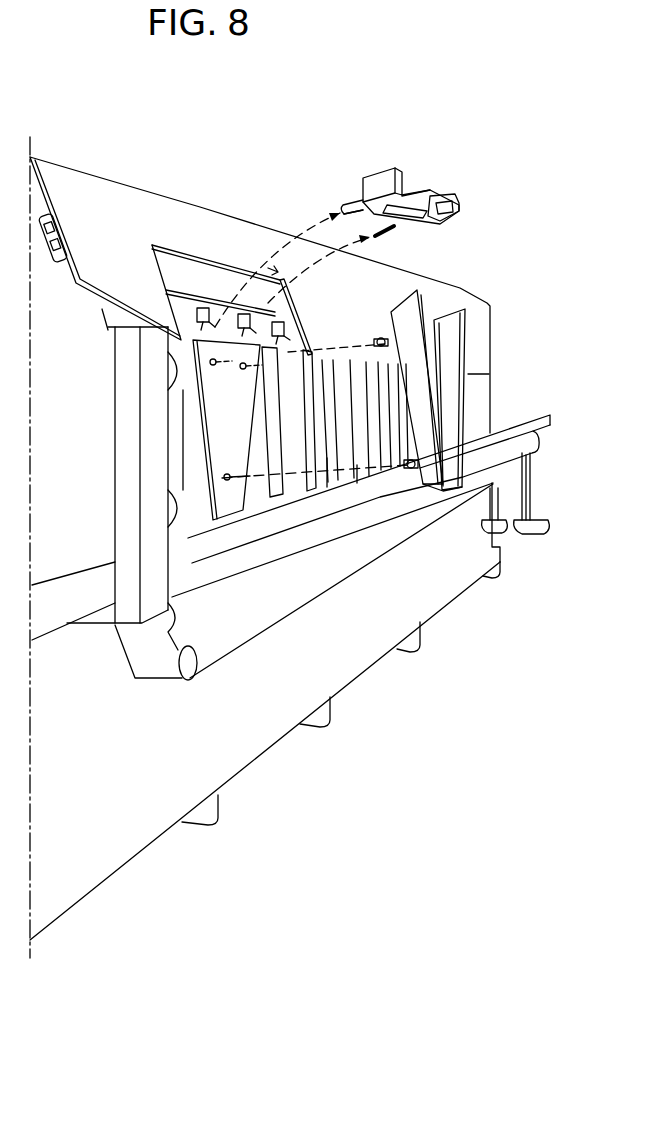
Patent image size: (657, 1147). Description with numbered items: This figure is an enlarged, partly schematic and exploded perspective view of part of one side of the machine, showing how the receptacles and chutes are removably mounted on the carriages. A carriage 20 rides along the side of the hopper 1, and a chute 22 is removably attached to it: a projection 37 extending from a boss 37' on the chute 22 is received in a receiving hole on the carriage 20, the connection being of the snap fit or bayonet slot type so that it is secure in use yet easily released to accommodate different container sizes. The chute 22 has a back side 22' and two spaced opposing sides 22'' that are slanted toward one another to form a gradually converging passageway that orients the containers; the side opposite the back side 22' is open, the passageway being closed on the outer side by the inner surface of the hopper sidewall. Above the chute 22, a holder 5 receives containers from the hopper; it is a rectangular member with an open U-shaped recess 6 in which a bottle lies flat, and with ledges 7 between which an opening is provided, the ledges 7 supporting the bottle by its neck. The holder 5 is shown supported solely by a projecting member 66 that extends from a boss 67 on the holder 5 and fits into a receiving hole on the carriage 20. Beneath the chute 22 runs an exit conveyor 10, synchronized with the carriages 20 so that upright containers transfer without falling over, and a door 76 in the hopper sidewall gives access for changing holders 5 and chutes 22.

The hopper 1 is at (140, 180).
The holder 5 is at (462, 208).
The recess 6 is at (416, 176).
The ledge 7 is at (405, 191).
The exit conveyor 10 is at (273, 618).
The carriage 20 is at (198, 428).
The chute 22 is at (488, 393).
The back side 22' is at (468, 387).
The spaced opposing sides 22'' is at (486, 399).
The projection 37 is at (338, 323).
The boss 37' is at (320, 501).
The projecting member 66 is at (343, 207).
The boss 67 is at (365, 198).
The door 76 is at (67, 203).